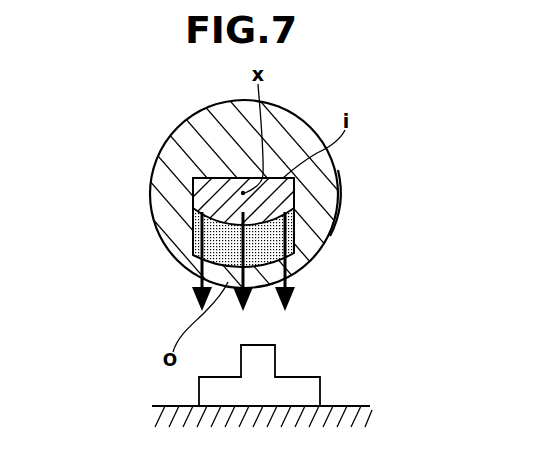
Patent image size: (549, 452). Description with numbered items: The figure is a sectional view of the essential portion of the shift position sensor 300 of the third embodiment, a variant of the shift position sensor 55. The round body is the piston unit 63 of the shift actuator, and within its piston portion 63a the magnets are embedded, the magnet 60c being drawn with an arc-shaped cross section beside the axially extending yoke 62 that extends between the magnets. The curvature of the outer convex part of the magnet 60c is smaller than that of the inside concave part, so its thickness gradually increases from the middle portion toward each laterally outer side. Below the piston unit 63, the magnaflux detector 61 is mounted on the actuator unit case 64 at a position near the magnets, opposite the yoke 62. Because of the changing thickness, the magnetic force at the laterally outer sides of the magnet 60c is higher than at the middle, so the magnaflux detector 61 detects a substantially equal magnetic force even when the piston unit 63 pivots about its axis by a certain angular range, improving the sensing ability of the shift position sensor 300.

The shift position sensor 300 is at (405, 61).
The shift position sensor 55 is at (402, 316).
The magnet 60c is at (258, 233).
The magnaflux detector 61 is at (263, 358).
The yoke 62 is at (215, 197).
The piston unit 63 is at (144, 190).
The piston portion 63a is at (338, 185).
The actuator unit case 64 is at (343, 406).